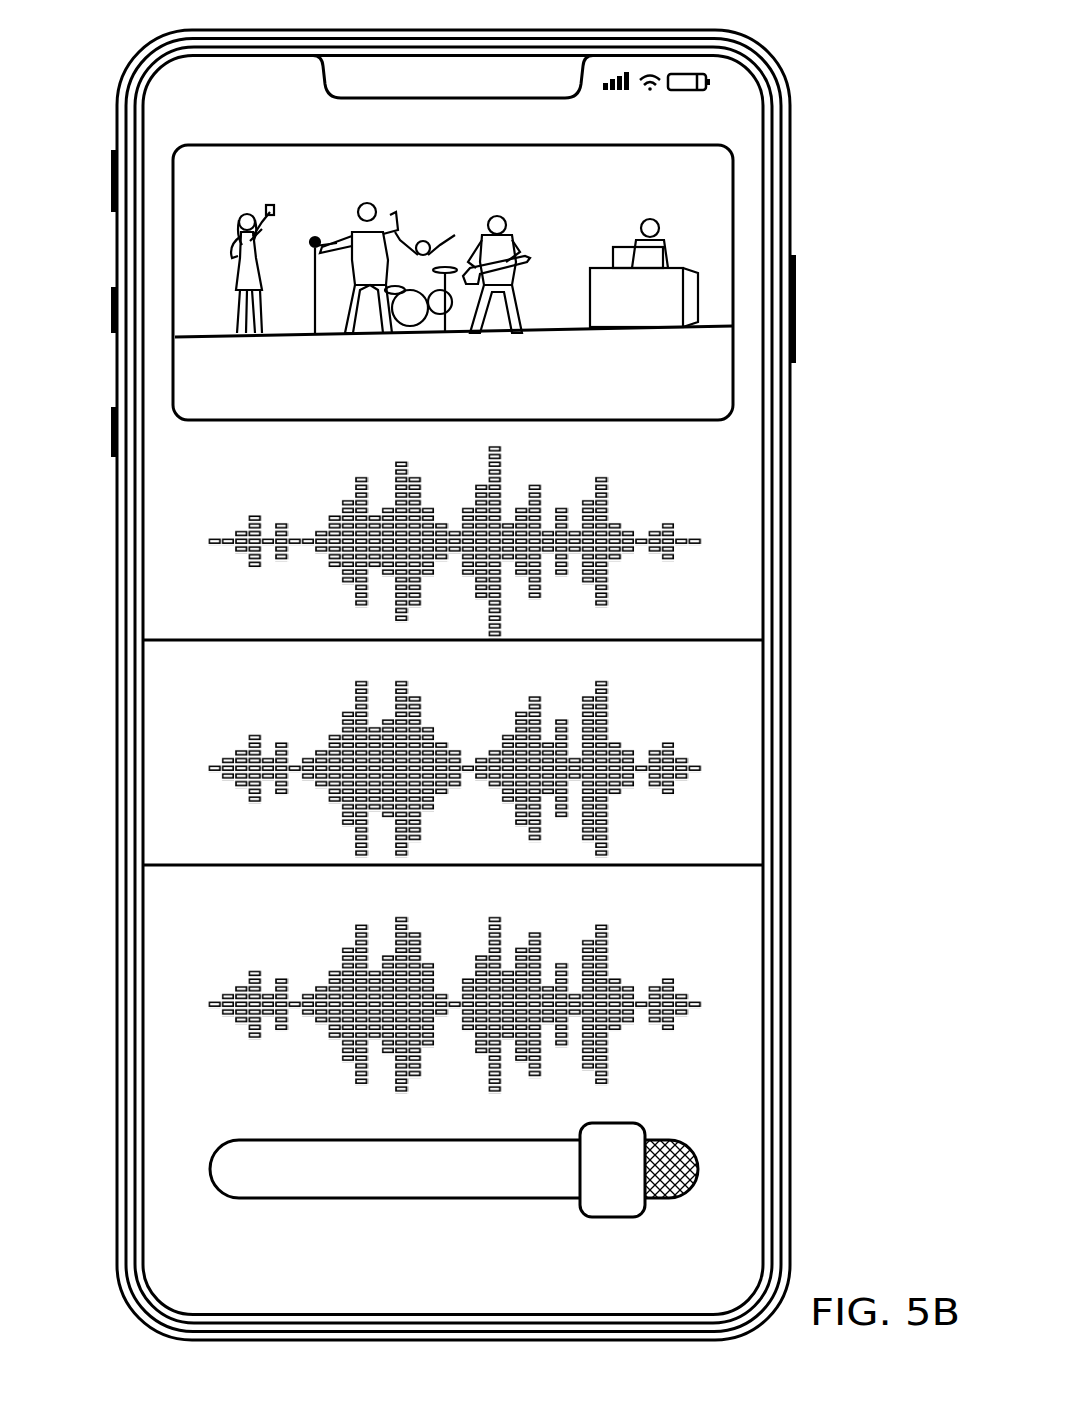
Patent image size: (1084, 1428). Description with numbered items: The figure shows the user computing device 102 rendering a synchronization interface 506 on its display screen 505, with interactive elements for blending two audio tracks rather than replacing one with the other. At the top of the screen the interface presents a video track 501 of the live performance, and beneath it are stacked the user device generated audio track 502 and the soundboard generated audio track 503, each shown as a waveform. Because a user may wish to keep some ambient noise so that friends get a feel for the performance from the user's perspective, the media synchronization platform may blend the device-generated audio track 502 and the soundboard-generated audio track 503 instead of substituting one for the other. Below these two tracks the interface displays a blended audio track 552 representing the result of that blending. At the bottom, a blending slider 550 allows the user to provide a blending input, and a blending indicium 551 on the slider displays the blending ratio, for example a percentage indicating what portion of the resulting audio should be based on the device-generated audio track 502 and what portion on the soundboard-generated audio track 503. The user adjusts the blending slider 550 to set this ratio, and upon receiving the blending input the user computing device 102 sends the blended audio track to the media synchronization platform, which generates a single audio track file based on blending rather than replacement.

The user computing device 102 is at (830, 112).
The display screen 505 is at (170, 75).
The synchronization interface 506 is at (165, 125).
The video track 501 is at (733, 177).
The user device generated audio track 502 is at (745, 502).
The soundboard generated audio track 503 is at (742, 762).
The blended audio track 552 is at (742, 952).
The blending slider 550 is at (278, 1124).
The blending indicium 551 is at (612, 1122).